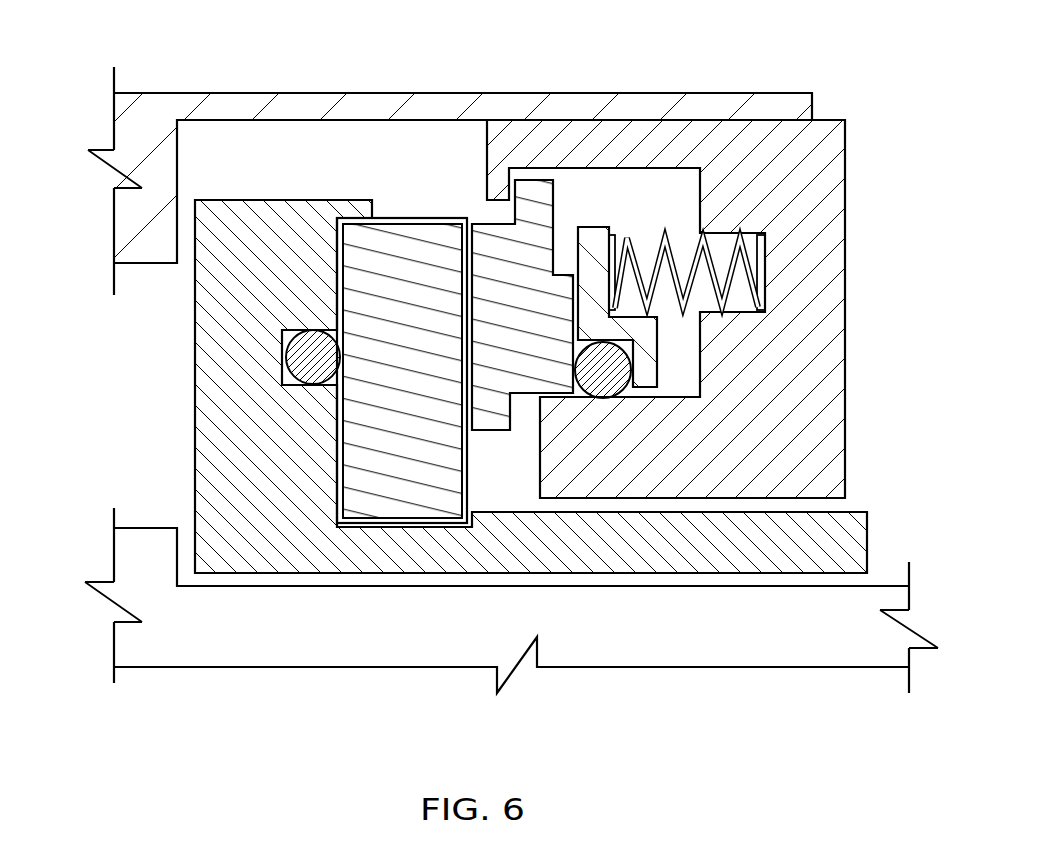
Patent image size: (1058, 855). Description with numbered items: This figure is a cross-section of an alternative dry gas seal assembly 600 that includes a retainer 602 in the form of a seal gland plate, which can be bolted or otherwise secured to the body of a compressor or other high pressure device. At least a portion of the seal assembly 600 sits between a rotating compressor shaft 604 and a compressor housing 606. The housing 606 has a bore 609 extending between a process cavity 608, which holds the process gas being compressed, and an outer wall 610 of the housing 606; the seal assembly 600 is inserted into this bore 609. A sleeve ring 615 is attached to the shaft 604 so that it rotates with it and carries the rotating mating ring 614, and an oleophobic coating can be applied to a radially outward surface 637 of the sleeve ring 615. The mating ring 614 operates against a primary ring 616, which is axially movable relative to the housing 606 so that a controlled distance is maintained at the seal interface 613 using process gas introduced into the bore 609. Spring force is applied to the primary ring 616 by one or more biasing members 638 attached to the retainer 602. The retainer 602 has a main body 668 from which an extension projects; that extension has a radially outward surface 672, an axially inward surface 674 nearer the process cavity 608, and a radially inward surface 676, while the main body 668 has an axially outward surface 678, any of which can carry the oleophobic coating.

The dry gas seal assembly 600 is at (870, 208).
The retainer 602 is at (814, 374).
The rotating compressor shaft 604 is at (590, 624).
The compressor housing 606 is at (125, 240).
The process cavity 608 is at (147, 432).
The bore 609 is at (320, 149).
The outer wall 610 is at (813, 95).
The seal interface 613 is at (460, 277).
The mating ring 614 is at (385, 387).
The sleeve ring 615 is at (525, 559).
The primary ring 616 is at (515, 332).
The radial outward surface 637 is at (843, 513).
The biasing member 638 is at (712, 250).
The main body 668 is at (780, 340).
The radially outward surface 672 is at (690, 403).
The axially inward surface 674 is at (548, 468).
The radially inward surface 676 is at (829, 496).
The axially outward surface 678 is at (852, 300).